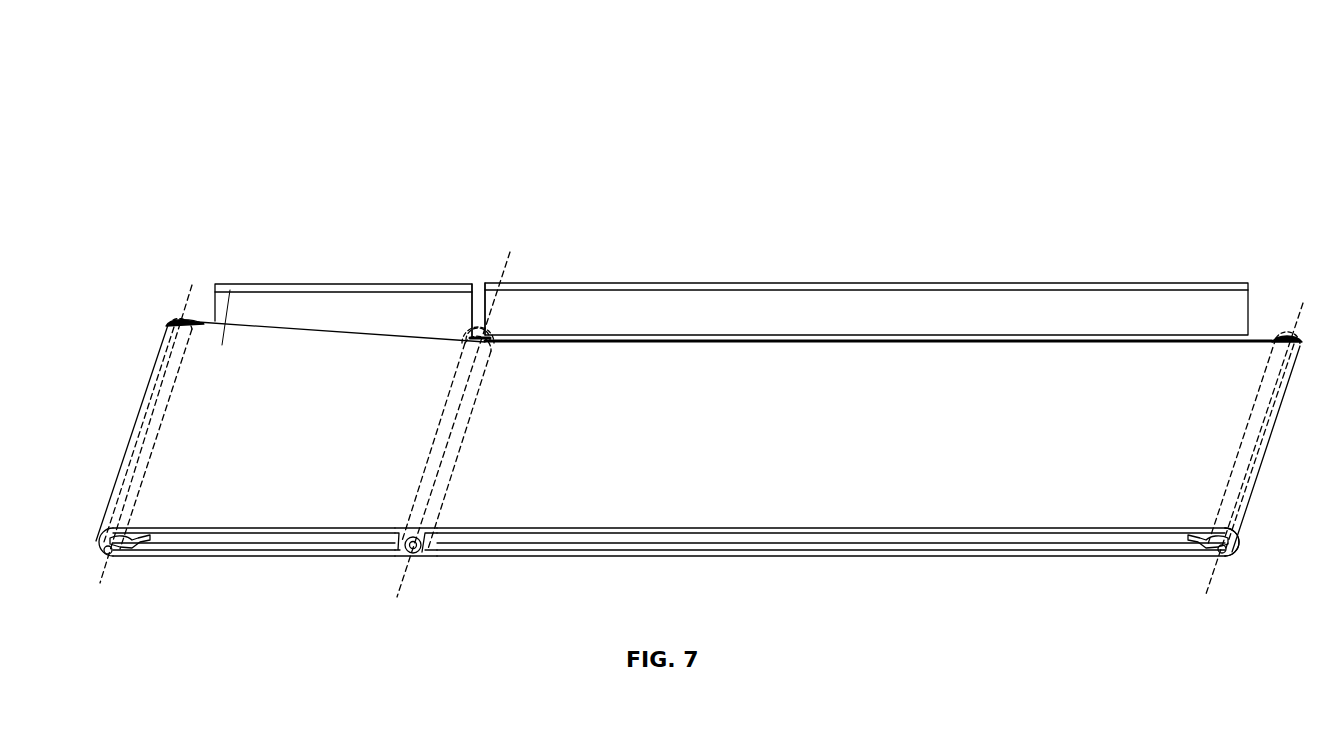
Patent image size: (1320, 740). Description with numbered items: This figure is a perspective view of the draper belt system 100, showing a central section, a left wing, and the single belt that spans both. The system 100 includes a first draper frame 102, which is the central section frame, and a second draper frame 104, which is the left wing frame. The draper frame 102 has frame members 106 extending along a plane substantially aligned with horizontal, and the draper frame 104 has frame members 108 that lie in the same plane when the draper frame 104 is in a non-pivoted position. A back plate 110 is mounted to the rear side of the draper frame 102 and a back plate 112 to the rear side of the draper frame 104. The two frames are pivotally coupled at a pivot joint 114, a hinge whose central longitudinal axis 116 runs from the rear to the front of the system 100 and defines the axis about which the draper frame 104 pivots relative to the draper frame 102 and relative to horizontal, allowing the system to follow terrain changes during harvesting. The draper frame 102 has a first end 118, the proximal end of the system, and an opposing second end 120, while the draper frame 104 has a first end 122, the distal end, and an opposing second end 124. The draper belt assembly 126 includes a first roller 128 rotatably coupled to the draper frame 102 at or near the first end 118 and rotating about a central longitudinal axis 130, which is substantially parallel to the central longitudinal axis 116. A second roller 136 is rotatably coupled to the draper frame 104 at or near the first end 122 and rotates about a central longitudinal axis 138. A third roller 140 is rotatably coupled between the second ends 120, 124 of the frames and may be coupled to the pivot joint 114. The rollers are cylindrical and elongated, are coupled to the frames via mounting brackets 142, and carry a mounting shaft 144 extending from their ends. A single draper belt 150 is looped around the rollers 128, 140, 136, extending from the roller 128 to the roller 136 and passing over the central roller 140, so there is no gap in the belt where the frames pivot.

The draper belt system 100 is at (1188, 66).
The first draper frame 102 is at (271, 248).
The second draper frame 104 is at (895, 220).
The frame members 106 is at (268, 543).
The frame members 108 is at (862, 543).
The back plate 110 is at (318, 283).
The back plate 112 is at (780, 283).
The pivot joint 114 is at (478, 338).
The central longitudinal axis 116 is at (504, 272).
The first end 118 is at (112, 376).
The second end 120 is at (396, 558).
The first end 122 is at (1279, 485).
The second end 124 is at (490, 542).
The draper belt assembly 126 is at (950, 264).
The first roller 128 is at (136, 452).
The central longitudinal axis 130 is at (102, 567).
The second roller 136 is at (1236, 472).
The central longitudinal axis 138 is at (1298, 318).
The third roller 140 is at (446, 410).
The mounting brackets 142 is at (130, 545).
The mounting shaft 144 is at (428, 548).
The draper belt 150 is at (224, 348).